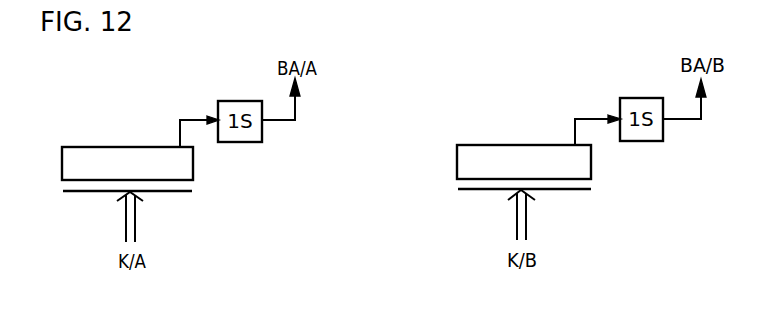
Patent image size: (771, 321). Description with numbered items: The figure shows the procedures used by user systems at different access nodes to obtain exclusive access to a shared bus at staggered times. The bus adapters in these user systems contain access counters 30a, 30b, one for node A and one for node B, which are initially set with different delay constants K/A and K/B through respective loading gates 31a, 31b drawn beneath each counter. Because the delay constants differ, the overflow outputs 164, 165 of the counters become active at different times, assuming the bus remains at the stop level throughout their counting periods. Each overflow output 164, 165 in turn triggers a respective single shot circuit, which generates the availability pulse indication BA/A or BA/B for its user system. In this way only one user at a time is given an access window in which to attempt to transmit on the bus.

The access counter 30a is at (72, 148).
The loading gate 31a is at (72, 193).
The overflow output 164 is at (185, 117).
The access counter 30b is at (487, 147).
The loading gate 31b is at (497, 191).
The overflow output 165 is at (593, 114).